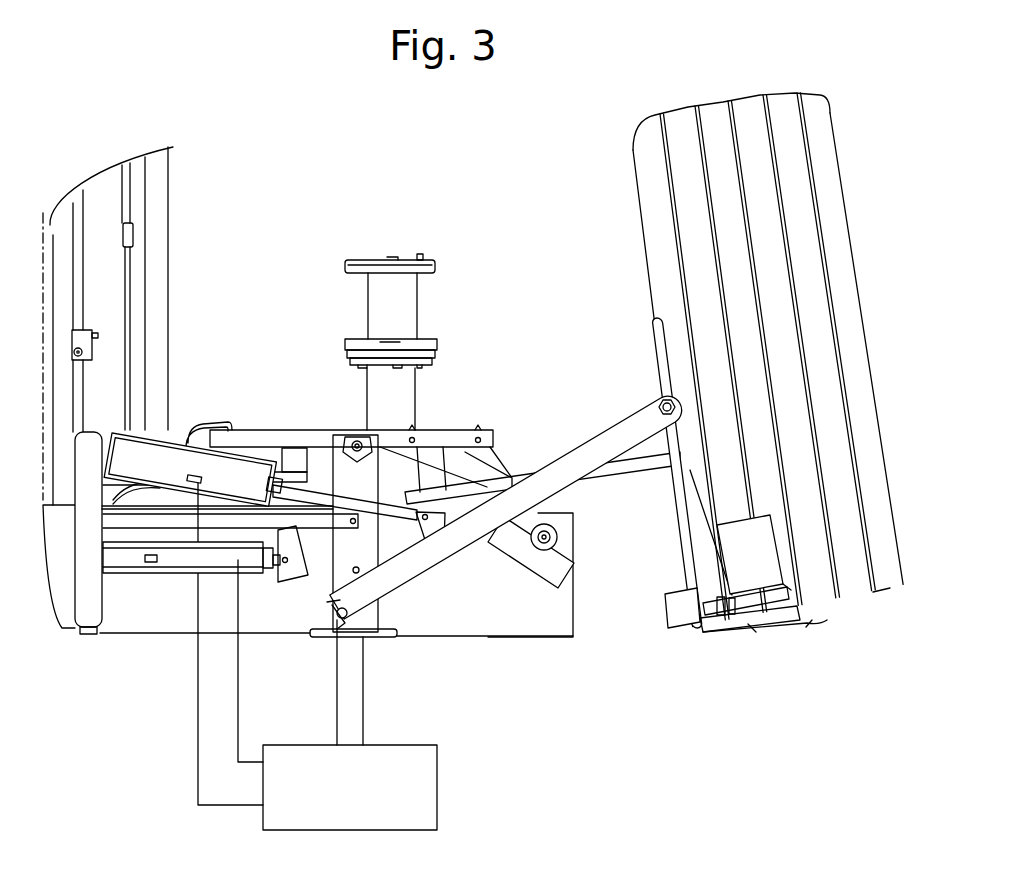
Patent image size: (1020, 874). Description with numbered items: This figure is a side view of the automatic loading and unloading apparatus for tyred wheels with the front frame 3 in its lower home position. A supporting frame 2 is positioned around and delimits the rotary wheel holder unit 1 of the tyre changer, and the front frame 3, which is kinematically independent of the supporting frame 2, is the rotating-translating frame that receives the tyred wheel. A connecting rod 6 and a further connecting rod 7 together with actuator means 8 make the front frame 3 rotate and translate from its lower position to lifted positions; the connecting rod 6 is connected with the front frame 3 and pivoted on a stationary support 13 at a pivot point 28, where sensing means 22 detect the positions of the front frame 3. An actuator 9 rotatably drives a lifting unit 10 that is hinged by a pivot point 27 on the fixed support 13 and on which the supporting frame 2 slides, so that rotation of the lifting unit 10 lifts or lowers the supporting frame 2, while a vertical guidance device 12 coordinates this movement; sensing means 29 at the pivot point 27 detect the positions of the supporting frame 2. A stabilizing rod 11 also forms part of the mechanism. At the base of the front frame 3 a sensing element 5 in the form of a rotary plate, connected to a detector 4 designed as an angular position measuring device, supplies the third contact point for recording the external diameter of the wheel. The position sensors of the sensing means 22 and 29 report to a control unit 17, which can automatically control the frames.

The rotary wheel holder unit 1 is at (399, 260).
The supporting frame 2 is at (447, 430).
The front frame 3 is at (686, 478).
The detector 4 is at (680, 612).
The sensing element 5 is at (775, 548).
The connecting rod 6 is at (630, 413).
The connecting rod 7 is at (637, 477).
The actuator means 8 is at (173, 440).
The actuator 9 is at (157, 578).
The lifting unit 10 is at (515, 567).
The stabilizing rod 11 is at (270, 527).
The guidance device 12 is at (63, 318).
The support 13 is at (330, 530).
The control unit 17 is at (346, 794).
The sensing means 22 is at (337, 617).
The pivot point 27 is at (355, 433).
The pivot point 28 is at (343, 620).
The sensing means 29 is at (347, 433).